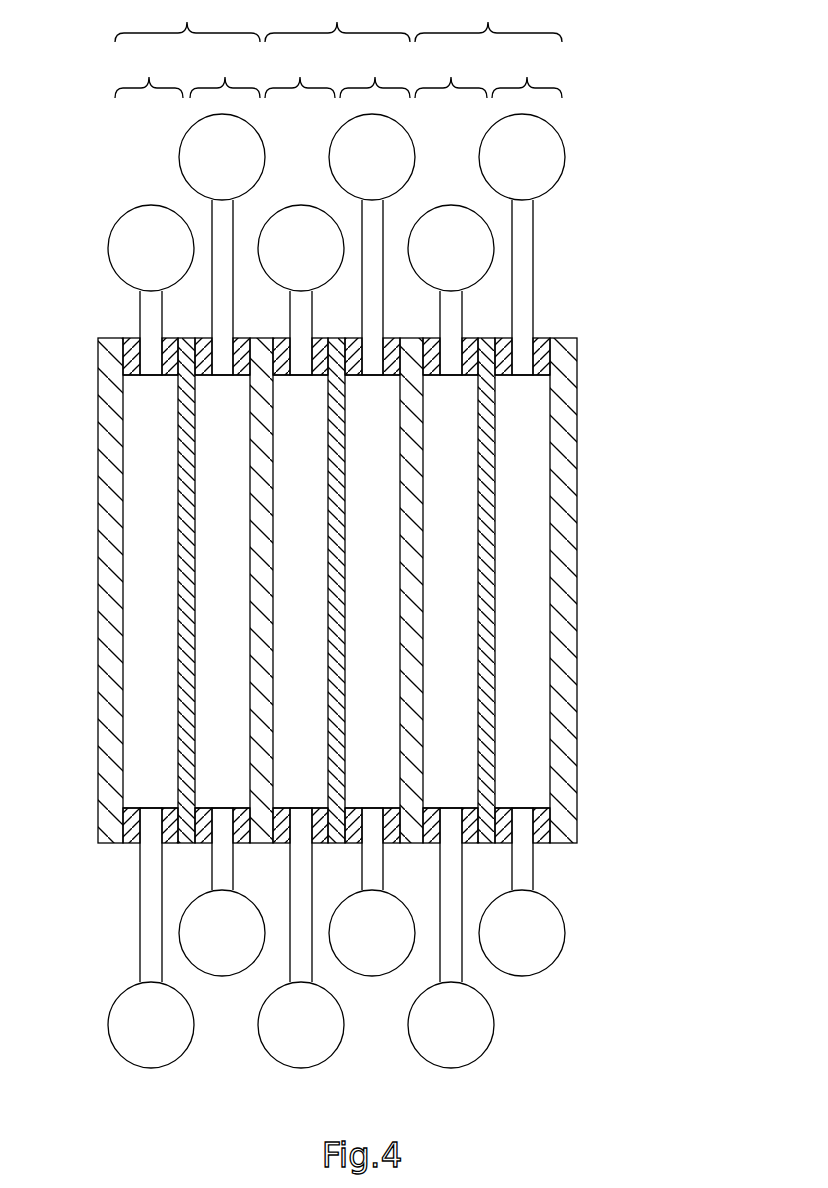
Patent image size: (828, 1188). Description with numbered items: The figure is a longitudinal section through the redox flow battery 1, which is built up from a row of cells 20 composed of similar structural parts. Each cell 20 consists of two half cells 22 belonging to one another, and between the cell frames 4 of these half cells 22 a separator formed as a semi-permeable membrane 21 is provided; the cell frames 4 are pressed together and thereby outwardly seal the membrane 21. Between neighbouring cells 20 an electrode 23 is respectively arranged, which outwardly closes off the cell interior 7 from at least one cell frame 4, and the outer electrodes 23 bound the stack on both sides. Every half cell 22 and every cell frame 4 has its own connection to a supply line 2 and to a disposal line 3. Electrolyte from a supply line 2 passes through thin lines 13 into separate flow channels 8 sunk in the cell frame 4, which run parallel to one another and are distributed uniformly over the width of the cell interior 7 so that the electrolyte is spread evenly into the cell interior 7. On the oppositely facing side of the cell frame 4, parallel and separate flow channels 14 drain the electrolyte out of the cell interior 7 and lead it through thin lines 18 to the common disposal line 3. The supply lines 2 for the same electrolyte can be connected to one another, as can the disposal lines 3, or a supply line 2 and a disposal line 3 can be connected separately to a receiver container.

The redox flow battery 1 is at (635, 168).
The supply line 2 is at (143, 262).
The disposal line 3 is at (143, 1039).
The cell frame 4 is at (133, 360).
The cell interior 7 is at (144, 501).
The flow channels 8 is at (453, 363).
The thin lines 13 is at (452, 322).
The flow channels 14 is at (152, 815).
The thin lines 18 is at (223, 857).
The cells 20 is at (338, 21).
The semi-permeable membrane 21 is at (187, 570).
The half cell 22 is at (338, 74).
The electrode 23 is at (117, 628).